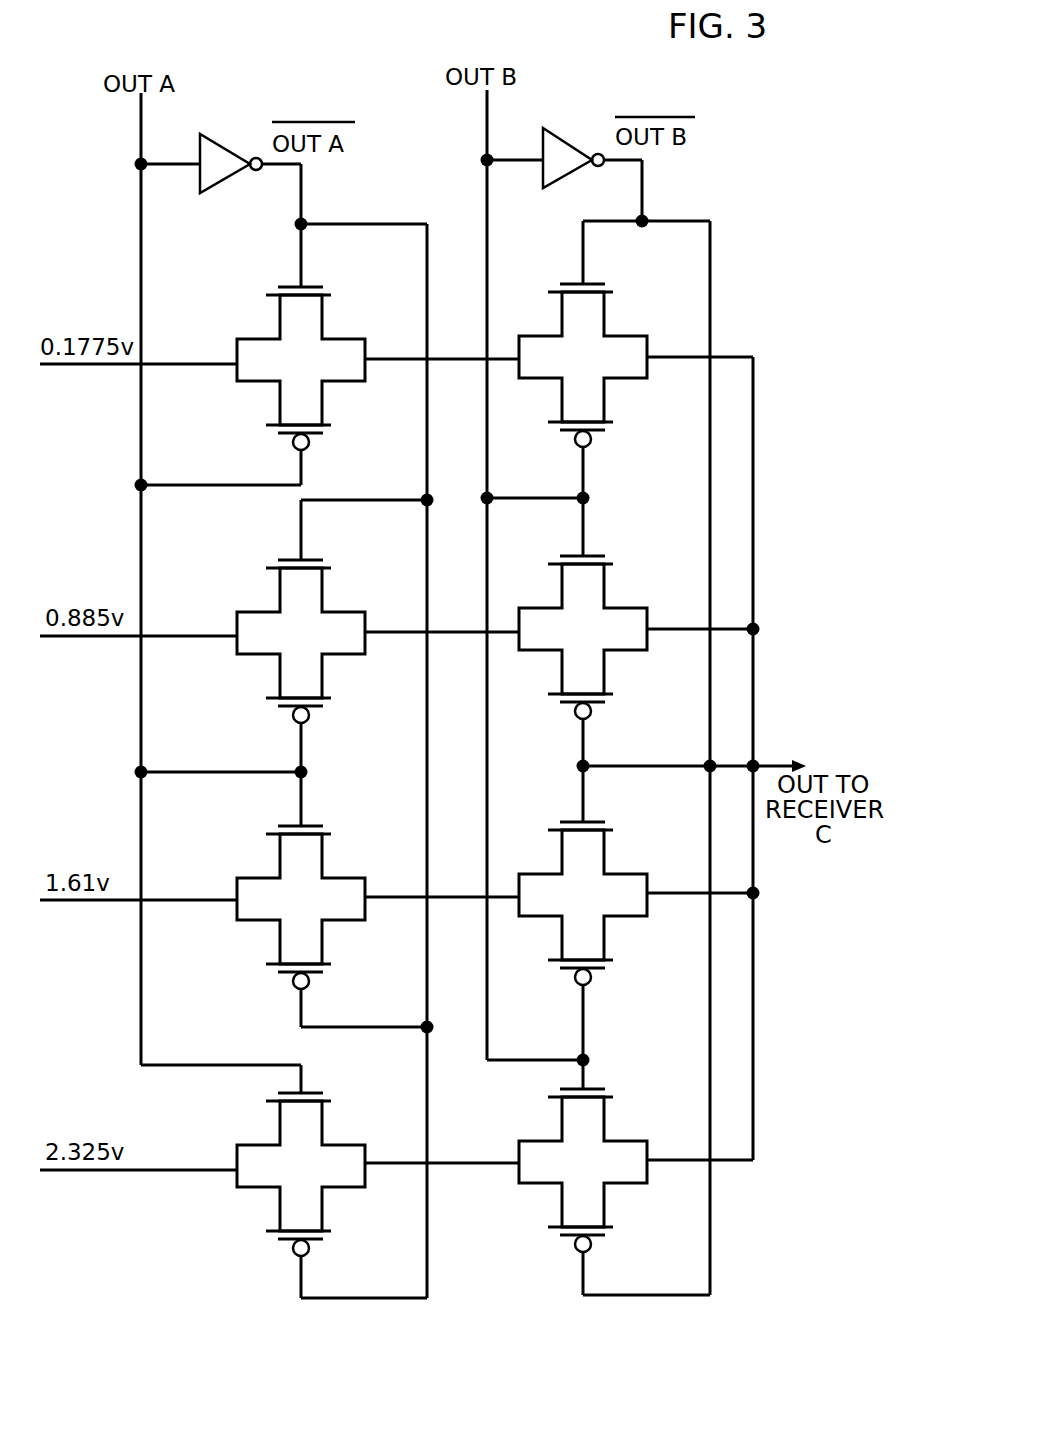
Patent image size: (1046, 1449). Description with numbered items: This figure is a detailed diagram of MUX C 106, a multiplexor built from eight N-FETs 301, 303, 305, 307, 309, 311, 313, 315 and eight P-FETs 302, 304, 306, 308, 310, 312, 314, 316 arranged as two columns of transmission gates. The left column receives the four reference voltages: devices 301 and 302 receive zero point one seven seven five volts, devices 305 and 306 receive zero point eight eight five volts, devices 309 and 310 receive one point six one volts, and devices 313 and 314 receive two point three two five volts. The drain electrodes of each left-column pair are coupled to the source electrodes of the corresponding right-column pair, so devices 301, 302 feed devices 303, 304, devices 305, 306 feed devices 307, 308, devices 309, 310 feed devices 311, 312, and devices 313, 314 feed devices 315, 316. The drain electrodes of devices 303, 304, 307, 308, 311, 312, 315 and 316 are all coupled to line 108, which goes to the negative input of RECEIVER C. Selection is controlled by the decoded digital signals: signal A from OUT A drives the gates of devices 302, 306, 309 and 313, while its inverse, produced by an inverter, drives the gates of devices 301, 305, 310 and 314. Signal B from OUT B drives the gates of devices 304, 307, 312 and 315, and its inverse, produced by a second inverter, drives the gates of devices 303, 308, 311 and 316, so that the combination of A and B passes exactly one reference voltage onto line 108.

The MUX C 106 is at (752, 221).
The line 108 is at (777, 763).
The N-FET 301 is at (323, 322).
The P-FET 302 is at (323, 397).
The N-FET 303 is at (605, 319).
The P-FET 304 is at (605, 394).
The N-FET 305 is at (323, 595).
The P-FET 306 is at (323, 670).
The N-FET 307 is at (605, 591).
The P-FET 308 is at (605, 666).
The N-FET 309 is at (323, 861).
The P-FET 310 is at (323, 936).
The N-FET 311 is at (605, 857).
The P-FET 312 is at (605, 932).
The N-FET 313 is at (323, 1128).
The P-FET 314 is at (323, 1203).
The N-FET 315 is at (605, 1124).
The P-FET 316 is at (605, 1199).